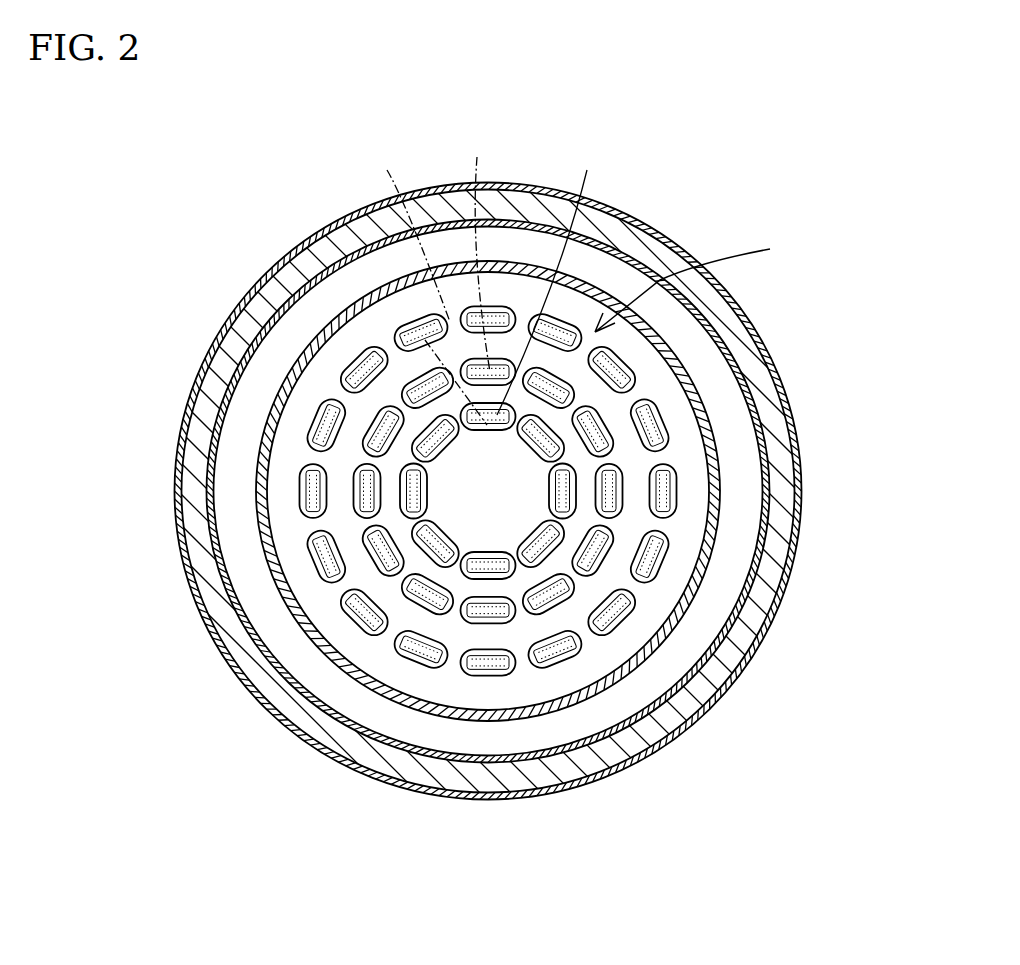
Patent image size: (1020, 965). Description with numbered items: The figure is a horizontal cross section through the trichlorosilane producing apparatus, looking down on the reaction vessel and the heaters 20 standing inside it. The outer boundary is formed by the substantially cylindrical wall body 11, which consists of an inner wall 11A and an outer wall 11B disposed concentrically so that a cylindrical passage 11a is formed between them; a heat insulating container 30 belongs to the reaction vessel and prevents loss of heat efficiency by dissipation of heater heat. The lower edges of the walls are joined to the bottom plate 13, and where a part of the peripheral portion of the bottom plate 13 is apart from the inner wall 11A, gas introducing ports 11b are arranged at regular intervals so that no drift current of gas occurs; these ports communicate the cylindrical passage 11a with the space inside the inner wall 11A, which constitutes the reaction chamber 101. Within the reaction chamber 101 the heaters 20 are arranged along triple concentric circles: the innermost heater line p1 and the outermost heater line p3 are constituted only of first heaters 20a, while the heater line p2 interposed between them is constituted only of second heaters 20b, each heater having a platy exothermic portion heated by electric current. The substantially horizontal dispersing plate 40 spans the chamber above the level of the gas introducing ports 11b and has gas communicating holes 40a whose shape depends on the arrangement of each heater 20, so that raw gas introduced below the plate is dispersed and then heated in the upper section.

The wall body 11 is at (513, 520).
The inner wall 11A is at (532, 511).
The outer wall 11B is at (501, 491).
The cylindrical passage 11a is at (740, 438).
The gas introducing ports 11b is at (690, 377).
The bottom plate 13 is at (723, 578).
The heat insulating container 30 is at (253, 665).
The dispersing plate 40 is at (427, 548).
The gas communicating holes 40a is at (598, 660).
The heaters 20 is at (366, 369).
The first heaters 20a is at (423, 433).
The second heaters 20b is at (373, 557).
The reaction chamber 101 is at (708, 286).
The heater line p1 is at (556, 279).
The heater line p2 is at (491, 250).
The heater line p3 is at (419, 286).